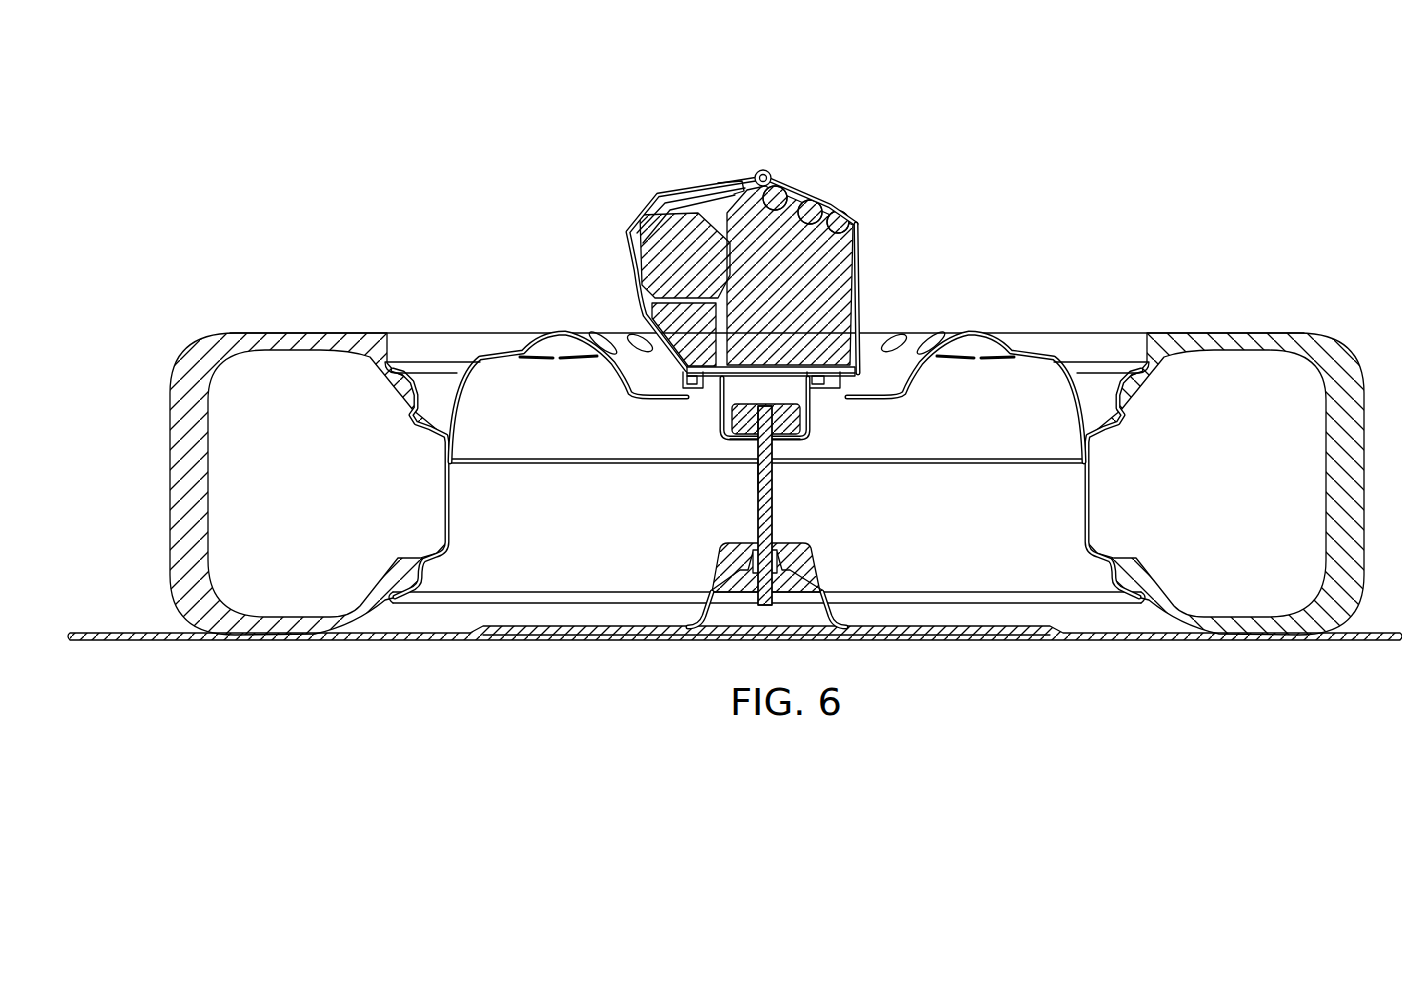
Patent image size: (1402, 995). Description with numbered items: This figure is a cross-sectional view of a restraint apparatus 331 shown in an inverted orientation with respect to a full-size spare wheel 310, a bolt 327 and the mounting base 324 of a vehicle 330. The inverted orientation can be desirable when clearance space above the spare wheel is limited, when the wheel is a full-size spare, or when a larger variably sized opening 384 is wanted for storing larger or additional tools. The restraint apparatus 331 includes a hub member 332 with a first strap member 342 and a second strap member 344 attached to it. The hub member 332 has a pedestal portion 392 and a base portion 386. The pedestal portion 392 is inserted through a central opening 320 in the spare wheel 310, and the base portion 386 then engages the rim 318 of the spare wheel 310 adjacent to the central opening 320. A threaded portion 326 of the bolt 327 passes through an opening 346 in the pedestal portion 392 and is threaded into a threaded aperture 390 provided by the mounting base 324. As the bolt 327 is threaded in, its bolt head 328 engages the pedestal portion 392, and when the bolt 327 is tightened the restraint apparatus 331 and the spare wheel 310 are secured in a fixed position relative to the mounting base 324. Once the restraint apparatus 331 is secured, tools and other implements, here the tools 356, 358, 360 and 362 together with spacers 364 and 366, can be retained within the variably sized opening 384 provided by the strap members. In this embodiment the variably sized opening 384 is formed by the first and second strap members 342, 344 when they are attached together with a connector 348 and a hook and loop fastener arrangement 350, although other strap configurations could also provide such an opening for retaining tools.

The spare wheel 310 is at (295, 170).
The rim 318 is at (478, 360).
The central opening 320 is at (713, 403).
The mounting base 324 is at (550, 641).
The threaded portion 326 is at (771, 498).
The bolt 327 is at (778, 473).
The bolt head 328 is at (798, 432).
The vehicle 330 is at (143, 680).
The restraint apparatus 331 is at (645, 152).
The hub member 332 is at (703, 427).
The first strap member 342 is at (621, 250).
The second strap member 344 is at (874, 235).
The opening 346 is at (760, 428).
The connector 348 is at (752, 175).
The hook and loop fastener arrangement 350 is at (672, 187).
The tool 356 is at (702, 270).
The tool 358 is at (850, 229).
The tool 360 is at (822, 203).
The tool 362 is at (778, 209).
The spacer 364 is at (797, 297).
The spacer 366 is at (703, 335).
The variably sized opening 384 is at (720, 197).
The base portion 386 is at (830, 388).
The threaded aperture 390 is at (750, 540).
The pedestal portion 392 is at (717, 434).